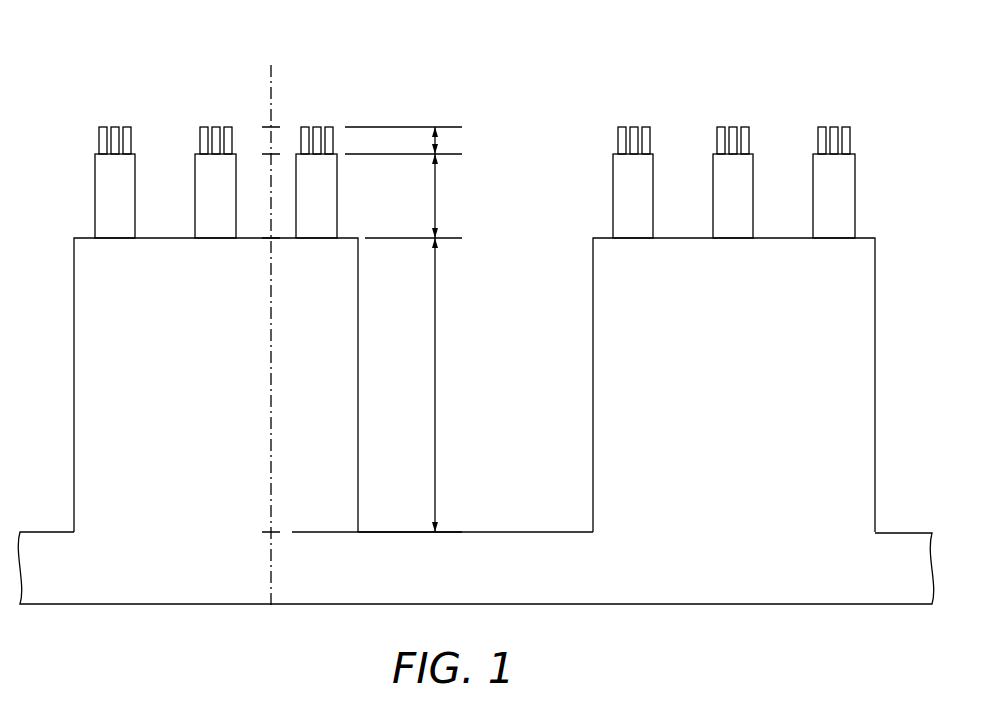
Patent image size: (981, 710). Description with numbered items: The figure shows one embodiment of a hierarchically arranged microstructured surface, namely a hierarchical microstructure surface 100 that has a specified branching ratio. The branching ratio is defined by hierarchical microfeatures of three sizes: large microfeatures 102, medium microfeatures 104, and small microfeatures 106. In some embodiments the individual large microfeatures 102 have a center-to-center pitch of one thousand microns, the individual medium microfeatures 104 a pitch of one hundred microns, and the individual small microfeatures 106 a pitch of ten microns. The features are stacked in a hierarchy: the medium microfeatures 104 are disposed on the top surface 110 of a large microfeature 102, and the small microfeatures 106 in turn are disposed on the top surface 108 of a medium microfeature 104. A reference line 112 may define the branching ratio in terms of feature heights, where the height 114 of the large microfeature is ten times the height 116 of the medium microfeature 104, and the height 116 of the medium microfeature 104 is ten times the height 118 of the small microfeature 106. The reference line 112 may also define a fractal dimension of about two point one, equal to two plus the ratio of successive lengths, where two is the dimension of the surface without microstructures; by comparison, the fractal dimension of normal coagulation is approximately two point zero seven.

The hierarchical microstructure surface 100 is at (855, 77).
The large microfeatures 102 is at (617, 286).
The medium microfeatures 104 is at (623, 213).
The small microfeatures 106 is at (617, 143).
The top surface of medium microfeature 108 is at (338, 148).
The top surface of large microfeature 110 is at (78, 233).
The reference line 112 is at (266, 97).
The height of the large microfeature 114 is at (445, 387).
The height of the medium microfeature 116 is at (448, 201).
The height of the small microfeature 118 is at (452, 139).